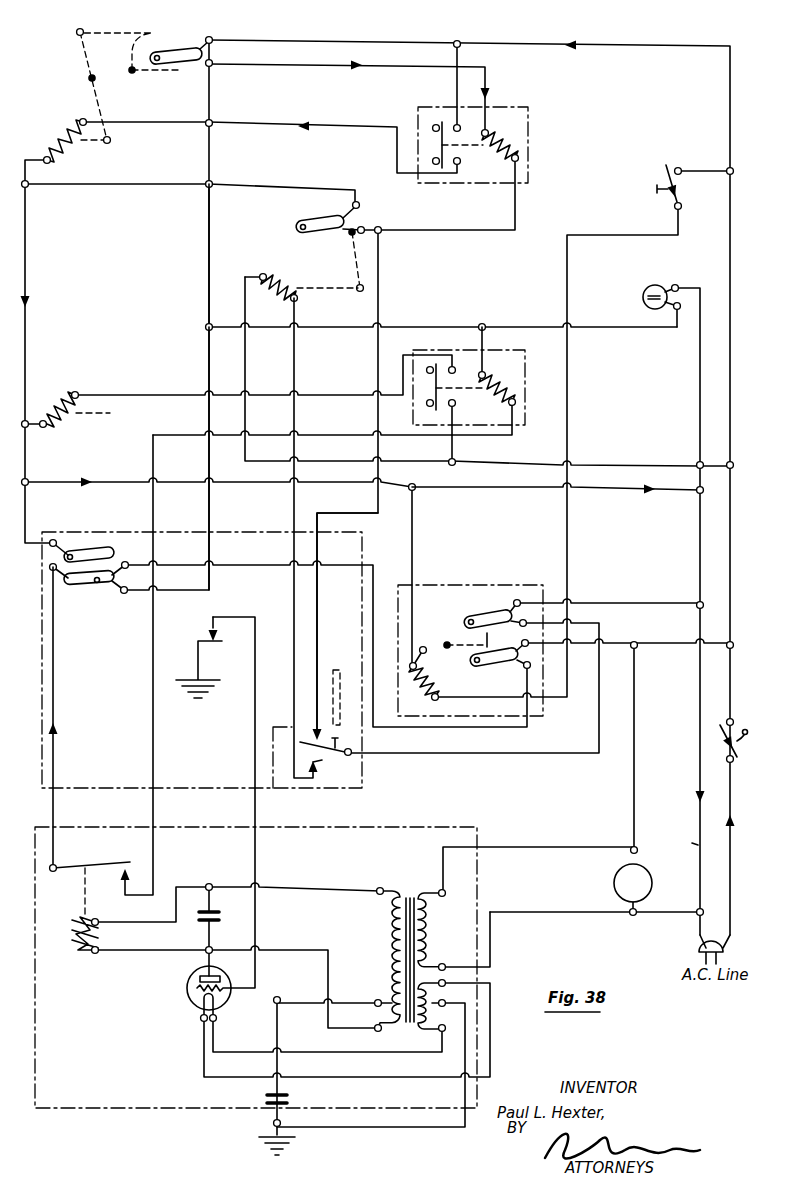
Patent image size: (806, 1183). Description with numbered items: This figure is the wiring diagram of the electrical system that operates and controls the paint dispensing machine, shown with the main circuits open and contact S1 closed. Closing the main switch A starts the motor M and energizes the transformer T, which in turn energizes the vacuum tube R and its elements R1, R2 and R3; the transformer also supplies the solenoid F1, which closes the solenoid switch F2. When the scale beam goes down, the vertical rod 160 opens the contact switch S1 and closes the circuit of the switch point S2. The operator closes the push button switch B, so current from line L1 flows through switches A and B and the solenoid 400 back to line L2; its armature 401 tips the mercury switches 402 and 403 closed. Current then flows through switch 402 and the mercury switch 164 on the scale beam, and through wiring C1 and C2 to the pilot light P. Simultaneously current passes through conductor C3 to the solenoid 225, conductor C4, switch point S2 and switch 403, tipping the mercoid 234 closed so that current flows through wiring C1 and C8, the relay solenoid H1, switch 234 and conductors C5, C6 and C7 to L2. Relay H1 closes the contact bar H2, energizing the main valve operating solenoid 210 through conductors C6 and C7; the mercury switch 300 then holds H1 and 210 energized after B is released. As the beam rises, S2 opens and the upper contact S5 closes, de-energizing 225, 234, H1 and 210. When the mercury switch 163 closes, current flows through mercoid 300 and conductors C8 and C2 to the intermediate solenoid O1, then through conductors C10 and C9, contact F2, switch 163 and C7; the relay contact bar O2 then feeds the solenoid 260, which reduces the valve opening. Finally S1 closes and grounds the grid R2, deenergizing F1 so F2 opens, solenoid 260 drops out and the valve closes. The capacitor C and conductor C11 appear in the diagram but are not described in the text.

The mercury switch 300 is at (192, 50).
The main valve operating solenoid 210 is at (66, 120).
The mercoid switch 234 is at (317, 220).
The solenoid 225 is at (288, 283).
The solenoid 260 is at (68, 393).
The mercury switch 163 is at (123, 524).
The mercury switch 164 is at (82, 582).
The vertical rod 160 is at (348, 662).
The solenoid 400 is at (433, 675).
The armature 401 is at (426, 705).
The mercury switch 402 is at (503, 663).
The mercury switch 403 is at (505, 614).
The contact switch S1 is at (216, 645).
The switch point S2 is at (327, 775).
The upper contact S5 is at (310, 742).
The wiring C1 is at (207, 351).
The wiring C2 is at (441, 321).
The conductor C3 is at (632, 467).
The conductor C4 is at (294, 498).
The conductor C5 is at (118, 187).
The conductor C6 is at (28, 470).
The conductor C7 is at (622, 495).
The wiring C8 is at (209, 256).
The conductor C9 is at (153, 718).
The conductor C10 is at (455, 451).
The conductor C11 is at (320, 623).
The relay solenoid H1 is at (518, 142).
The contact bar H2 is at (455, 165).
The push button switch B is at (681, 168).
The pilot light P is at (661, 287).
The intermediate solenoid O1 is at (514, 392).
The relay contact bar O2 is at (428, 400).
The main switch A is at (737, 734).
The motor M is at (658, 881).
The line L1 is at (745, 880).
The line L2 is at (684, 867).
The solenoid F1 is at (86, 956).
The solenoid switch F2 is at (135, 868).
The capacitor C is at (221, 916).
The vacuum tube R is at (226, 1007).
The tube element R1 is at (203, 1017).
The grid R2 is at (195, 993).
The tube element R3 is at (197, 978).
The transformer T is at (385, 926).